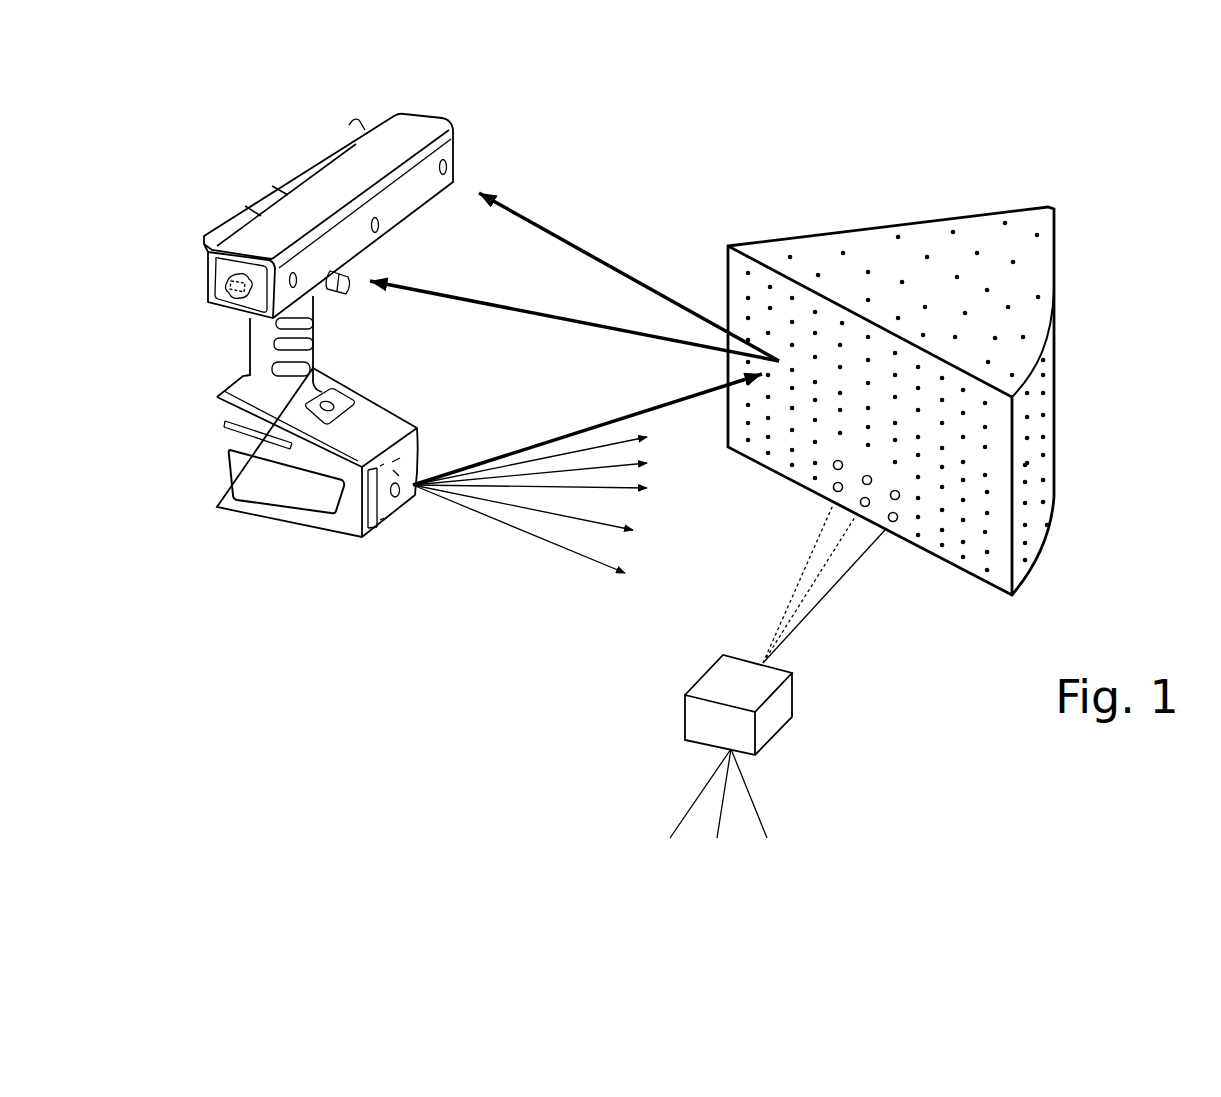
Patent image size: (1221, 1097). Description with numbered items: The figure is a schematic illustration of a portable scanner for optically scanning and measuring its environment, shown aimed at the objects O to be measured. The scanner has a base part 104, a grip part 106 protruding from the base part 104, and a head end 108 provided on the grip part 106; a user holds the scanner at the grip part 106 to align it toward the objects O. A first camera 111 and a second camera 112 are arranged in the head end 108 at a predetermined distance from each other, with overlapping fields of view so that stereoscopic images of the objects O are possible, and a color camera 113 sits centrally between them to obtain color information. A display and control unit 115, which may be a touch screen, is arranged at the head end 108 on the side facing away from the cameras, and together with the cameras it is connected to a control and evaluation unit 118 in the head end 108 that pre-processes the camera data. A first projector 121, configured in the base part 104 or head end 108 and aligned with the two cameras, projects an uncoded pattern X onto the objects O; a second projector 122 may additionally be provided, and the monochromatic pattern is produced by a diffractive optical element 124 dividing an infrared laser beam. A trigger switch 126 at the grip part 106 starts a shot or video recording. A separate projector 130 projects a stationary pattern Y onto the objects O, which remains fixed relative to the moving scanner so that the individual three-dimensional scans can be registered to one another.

The base part 104 is at (285, 503).
The grip part 106 is at (260, 338).
The head end 108 is at (402, 125).
The first camera 111 is at (297, 283).
The second camera 112 is at (447, 167).
The color camera 113 is at (379, 226).
The display and control unit 115 is at (285, 183).
The control and evaluation unit 118 is at (217, 297).
The first projector 121 is at (398, 495).
The second projector 122 is at (397, 460).
The diffractive optical element 124 is at (378, 527).
The trigger switch 126 is at (350, 285).
The separate projector 130 is at (778, 705).
The objects O is at (910, 232).
The pattern X is at (792, 433).
The stationary pattern Y is at (898, 504).